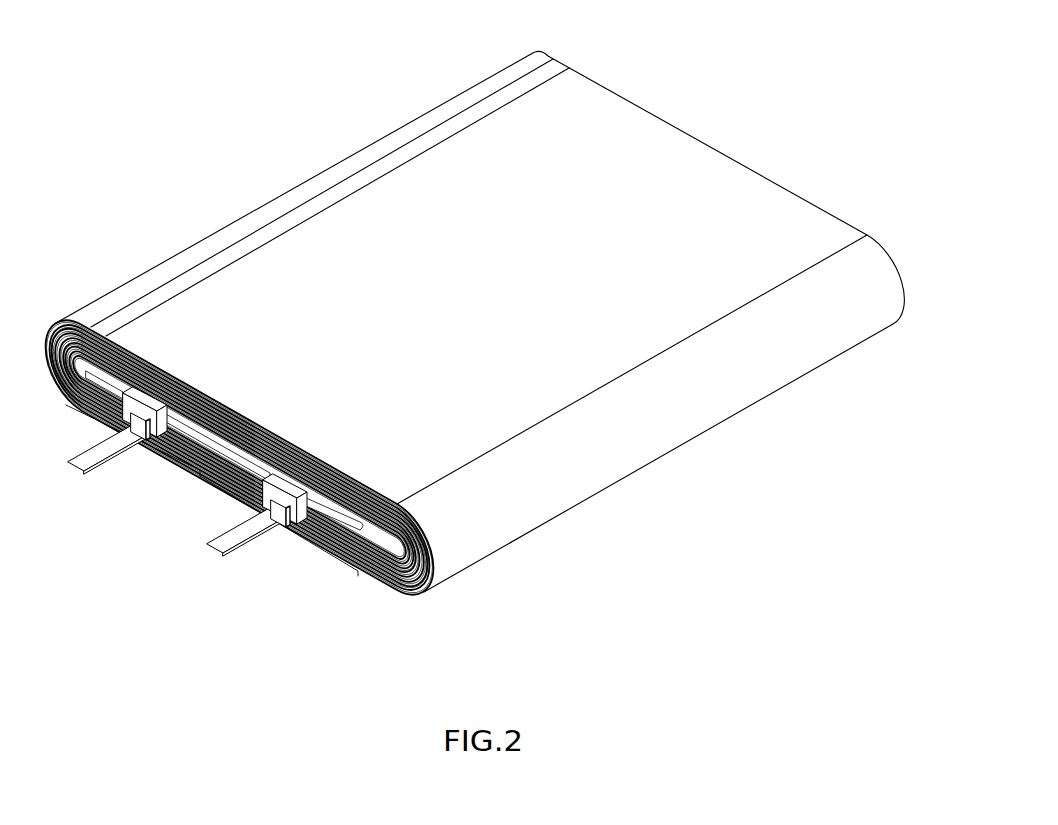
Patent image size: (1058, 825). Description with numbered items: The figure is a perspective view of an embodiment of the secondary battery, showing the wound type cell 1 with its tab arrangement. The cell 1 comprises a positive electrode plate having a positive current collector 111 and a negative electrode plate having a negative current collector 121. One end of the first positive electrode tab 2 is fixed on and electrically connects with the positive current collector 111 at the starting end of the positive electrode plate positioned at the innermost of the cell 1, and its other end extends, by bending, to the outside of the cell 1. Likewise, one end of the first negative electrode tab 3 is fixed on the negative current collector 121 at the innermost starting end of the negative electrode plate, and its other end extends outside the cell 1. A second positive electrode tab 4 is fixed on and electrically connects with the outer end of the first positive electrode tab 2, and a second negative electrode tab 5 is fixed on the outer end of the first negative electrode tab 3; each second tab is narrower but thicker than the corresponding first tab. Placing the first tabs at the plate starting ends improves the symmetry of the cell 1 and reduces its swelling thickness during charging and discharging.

The cell 1 is at (585, 135).
The first positive electrode tab 2 is at (122, 422).
The first negative electrode tab 3 is at (253, 507).
The second positive electrode tab 4 is at (95, 460).
The second negative electrode tab 5 is at (238, 538).
The positive current collector 111 is at (133, 390).
The negative current collector 121 is at (302, 478).